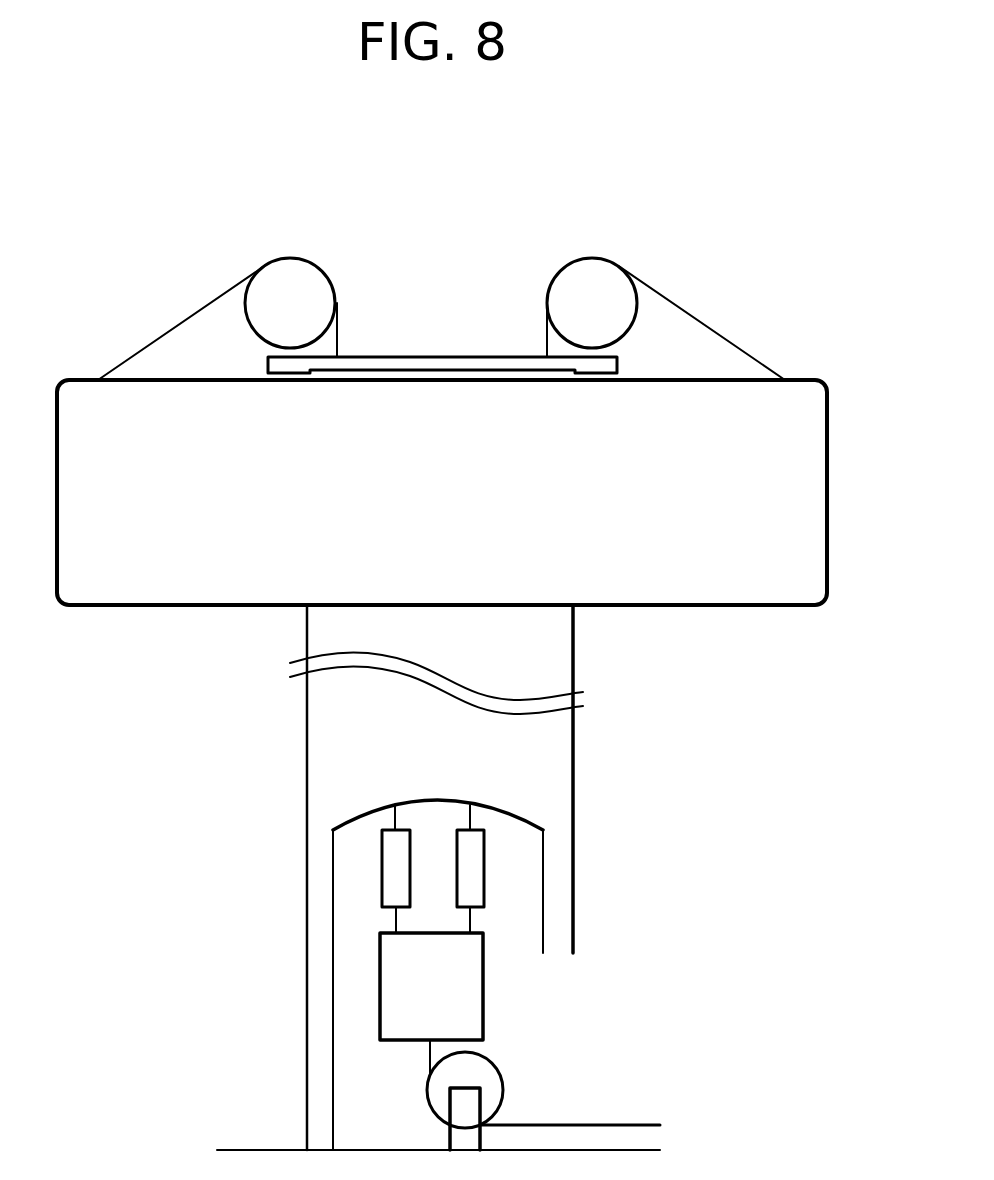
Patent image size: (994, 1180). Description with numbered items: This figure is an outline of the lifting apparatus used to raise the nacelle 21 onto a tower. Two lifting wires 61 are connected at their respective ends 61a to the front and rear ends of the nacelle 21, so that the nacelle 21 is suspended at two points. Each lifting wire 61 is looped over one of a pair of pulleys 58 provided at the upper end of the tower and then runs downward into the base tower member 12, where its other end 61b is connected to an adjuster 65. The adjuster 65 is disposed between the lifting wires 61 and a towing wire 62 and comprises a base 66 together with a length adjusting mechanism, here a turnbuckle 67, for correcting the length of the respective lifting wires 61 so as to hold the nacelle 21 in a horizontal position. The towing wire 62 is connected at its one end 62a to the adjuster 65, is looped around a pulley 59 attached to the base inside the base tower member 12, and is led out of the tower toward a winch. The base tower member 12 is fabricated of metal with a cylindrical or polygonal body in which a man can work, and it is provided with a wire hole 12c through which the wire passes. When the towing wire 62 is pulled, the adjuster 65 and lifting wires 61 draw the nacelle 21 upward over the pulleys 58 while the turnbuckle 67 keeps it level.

The base tower member 12 is at (560, 845).
The wire hole 12c is at (560, 990).
The nacelle 21 is at (808, 490).
The pulleys 58 is at (292, 265).
The pulley 59 is at (432, 1092).
The lifting wires 61 is at (162, 330).
The ends of lifting wires 61a is at (93, 378).
The other ends of lifting wires 61b is at (395, 830).
The towing wire 62 is at (620, 1125).
The end of towing wire 62a is at (430, 1043).
The adjuster 65 is at (350, 978).
The base 66 is at (467, 1020).
The turnbuckle 67 is at (386, 872).